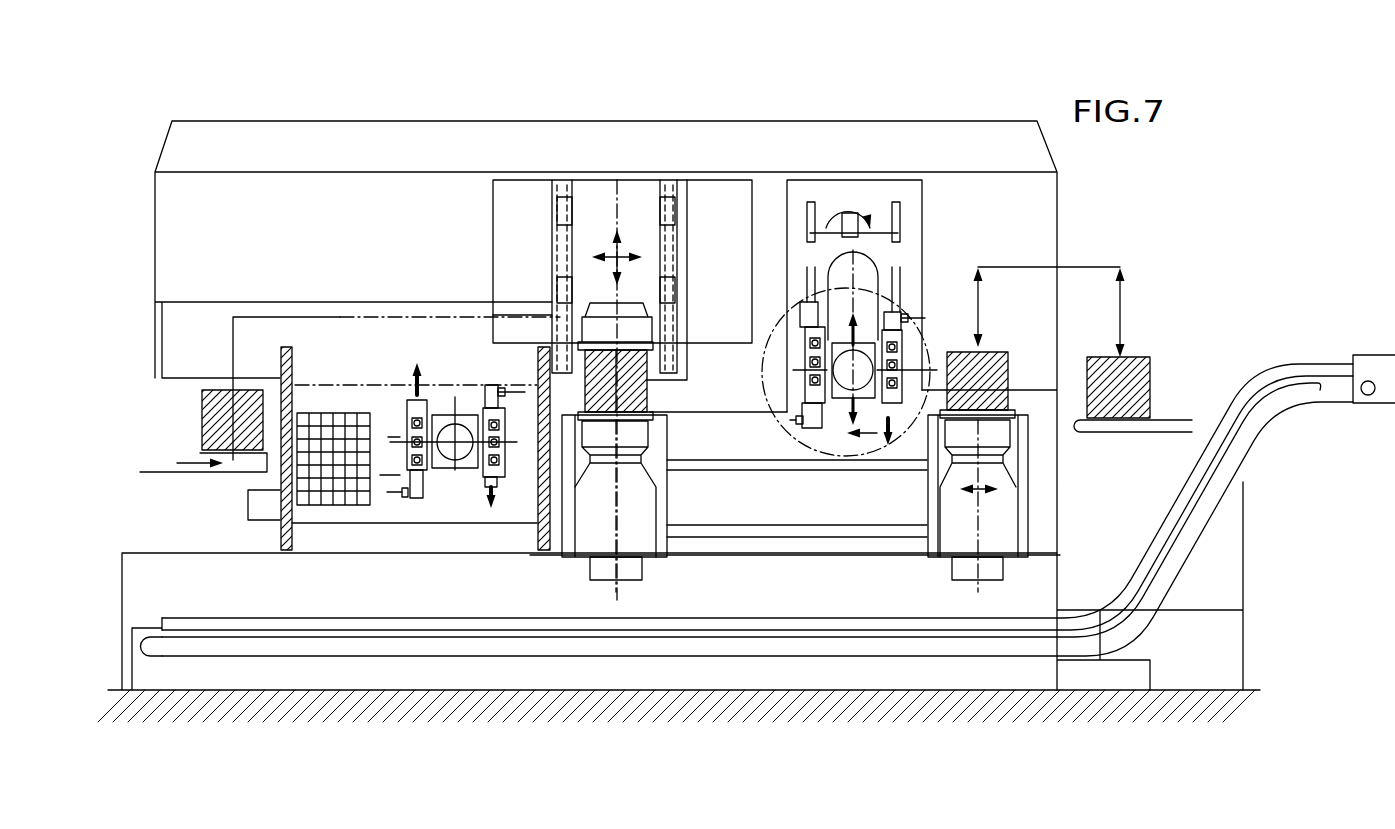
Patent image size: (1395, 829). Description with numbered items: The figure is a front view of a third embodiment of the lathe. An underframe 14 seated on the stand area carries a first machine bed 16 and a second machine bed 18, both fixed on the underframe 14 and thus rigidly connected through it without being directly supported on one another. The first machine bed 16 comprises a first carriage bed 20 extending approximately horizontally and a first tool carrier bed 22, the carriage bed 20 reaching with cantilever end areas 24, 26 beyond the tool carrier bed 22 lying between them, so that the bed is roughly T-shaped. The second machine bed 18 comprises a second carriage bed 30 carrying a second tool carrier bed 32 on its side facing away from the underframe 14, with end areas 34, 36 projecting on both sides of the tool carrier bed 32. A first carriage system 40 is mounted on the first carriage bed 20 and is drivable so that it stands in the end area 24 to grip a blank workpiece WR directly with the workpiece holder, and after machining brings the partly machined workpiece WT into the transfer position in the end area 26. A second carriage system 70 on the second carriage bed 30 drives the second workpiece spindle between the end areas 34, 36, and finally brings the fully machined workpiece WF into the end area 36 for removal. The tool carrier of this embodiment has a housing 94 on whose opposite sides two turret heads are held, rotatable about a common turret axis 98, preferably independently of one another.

The underframe 14 is at (622, 667).
The first machine bed 16 is at (441, 290).
The second machine bed 18 is at (933, 282).
The first carriage bed 20 is at (330, 338).
The first tool carrier bed 22 is at (378, 474).
The cantilever end area 24 is at (190, 325).
The cantilever end area 26 is at (676, 431).
The second carriage bed 30 is at (900, 513).
The second tool carrier bed 32 is at (905, 202).
The end area 34 is at (700, 410).
The end area 36 is at (1043, 445).
The first carriage system 40 is at (648, 178).
The second carriage system 70 is at (660, 570).
The housing 94 is at (886, 432).
The turret axis 98 is at (957, 352).
The blank workpiece WR is at (217, 428).
The partly machined workpiece WT is at (603, 343).
The fully machined workpiece WF is at (1138, 372).